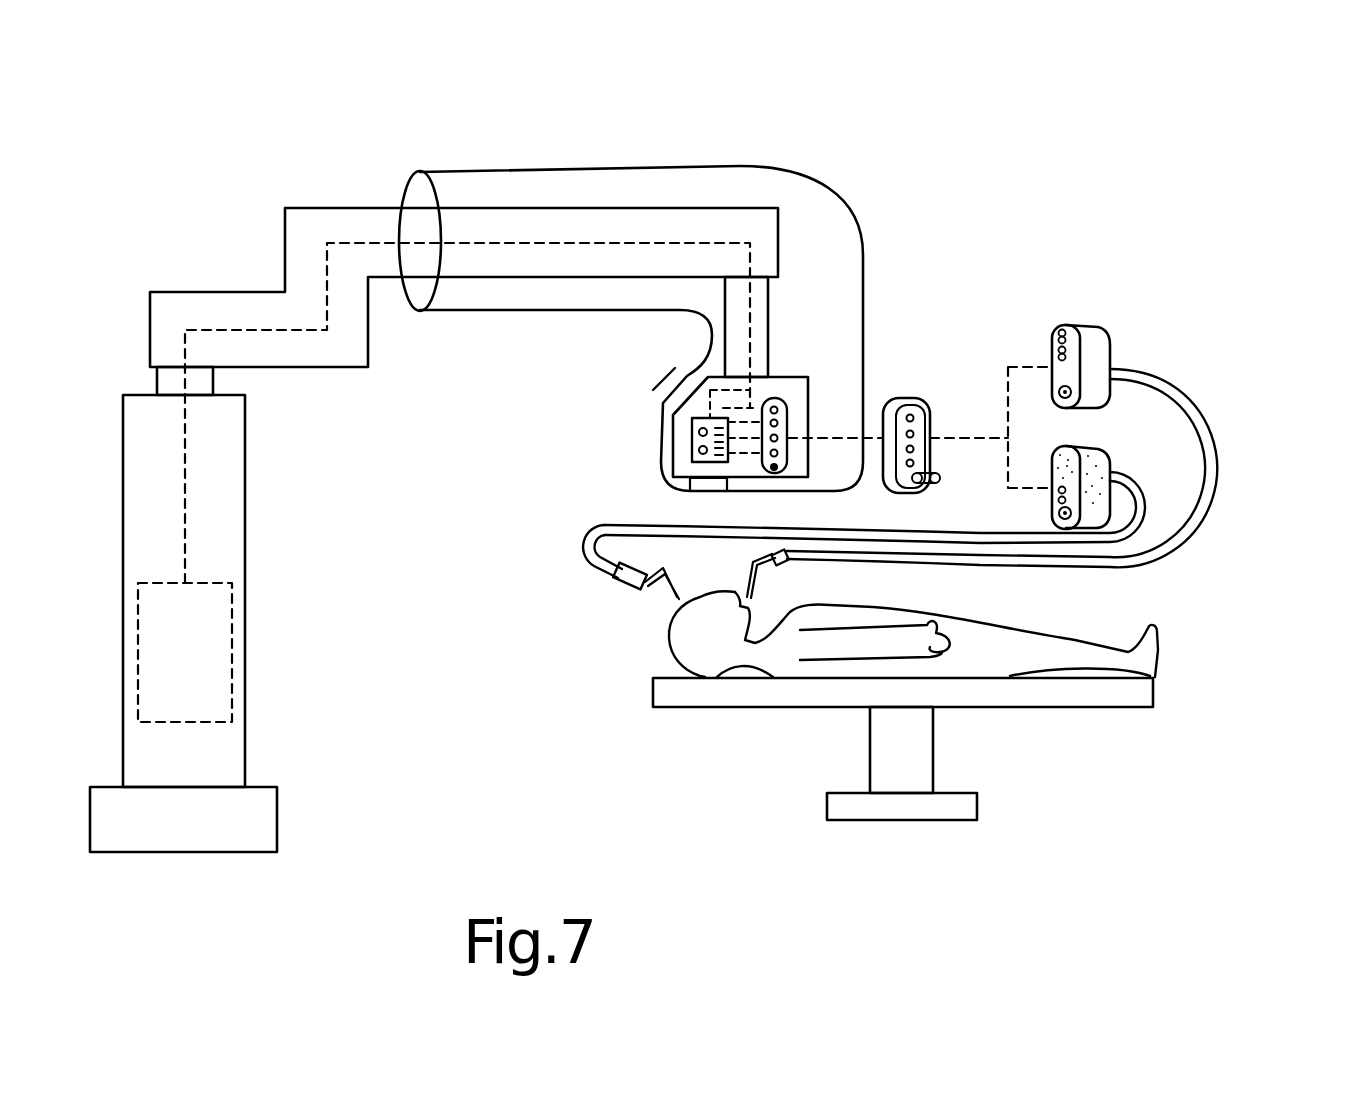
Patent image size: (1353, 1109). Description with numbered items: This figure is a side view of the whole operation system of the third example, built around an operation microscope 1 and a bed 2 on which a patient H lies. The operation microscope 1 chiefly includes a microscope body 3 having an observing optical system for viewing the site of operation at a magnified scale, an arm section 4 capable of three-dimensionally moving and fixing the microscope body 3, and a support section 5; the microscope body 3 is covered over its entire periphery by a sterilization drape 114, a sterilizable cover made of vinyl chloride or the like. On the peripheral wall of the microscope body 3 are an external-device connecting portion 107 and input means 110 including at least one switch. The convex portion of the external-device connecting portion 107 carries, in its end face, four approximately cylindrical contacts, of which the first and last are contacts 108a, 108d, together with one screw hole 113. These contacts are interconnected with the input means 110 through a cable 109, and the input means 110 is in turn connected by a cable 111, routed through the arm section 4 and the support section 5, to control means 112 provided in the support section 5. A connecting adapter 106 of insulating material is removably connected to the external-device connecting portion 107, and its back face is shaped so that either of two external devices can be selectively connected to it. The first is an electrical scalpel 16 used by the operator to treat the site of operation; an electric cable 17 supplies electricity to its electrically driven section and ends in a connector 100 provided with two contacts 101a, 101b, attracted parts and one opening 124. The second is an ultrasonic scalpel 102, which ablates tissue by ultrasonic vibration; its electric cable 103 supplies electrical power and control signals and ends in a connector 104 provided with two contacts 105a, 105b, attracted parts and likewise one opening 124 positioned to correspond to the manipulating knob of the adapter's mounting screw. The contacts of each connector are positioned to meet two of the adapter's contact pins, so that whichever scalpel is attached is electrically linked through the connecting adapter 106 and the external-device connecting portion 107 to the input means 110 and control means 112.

The operation microscope 1 is at (895, 143).
The bed 2 is at (737, 708).
The microscope body 3 is at (797, 393).
The arm section 4 is at (373, 403).
The support section 5 is at (232, 478).
The electrical scalpel 16 is at (622, 590).
The electric cable 17 is at (583, 532).
The connector 100 is at (1112, 468).
The contact 101a is at (1058, 490).
The contact 101b is at (1110, 505).
The ultrasonic scalpel 102 is at (768, 572).
The electric cable 103 is at (1208, 497).
The connector 104 is at (1103, 350).
The contact 105a is at (1067, 332).
The contact 105b is at (1052, 348).
The connecting adapter 106 is at (903, 398).
The external-device connecting portion 107 is at (789, 427).
The contact 108a is at (918, 330).
The contact 108d is at (777, 397).
The cable 109 is at (755, 406).
The input means 110 is at (693, 447).
The cable 111 is at (352, 243).
The control means 112 is at (218, 658).
The screw hole 113 is at (780, 462).
The sterilization drape 114 is at (583, 165).
The opening 124 is at (1135, 373).
The patient H is at (663, 648).